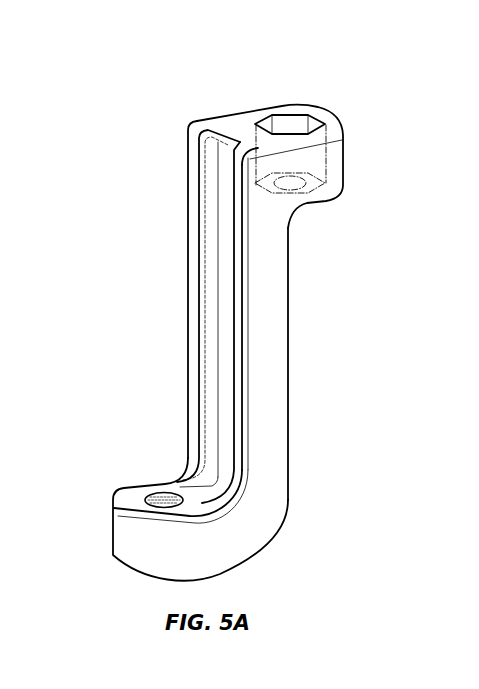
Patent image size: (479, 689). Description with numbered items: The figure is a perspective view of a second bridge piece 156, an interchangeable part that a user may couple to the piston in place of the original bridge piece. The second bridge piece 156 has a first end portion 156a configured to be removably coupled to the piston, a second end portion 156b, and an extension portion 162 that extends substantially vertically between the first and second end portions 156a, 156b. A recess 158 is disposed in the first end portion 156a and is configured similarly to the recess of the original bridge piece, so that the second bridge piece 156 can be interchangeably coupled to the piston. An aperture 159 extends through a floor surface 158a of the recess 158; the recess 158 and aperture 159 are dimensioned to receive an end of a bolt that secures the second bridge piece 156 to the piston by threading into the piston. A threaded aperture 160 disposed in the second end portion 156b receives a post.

The second bridge piece 156 is at (220, 97).
The first end portion 156a is at (344, 162).
The second end portion 156b is at (122, 541).
The recess 158 is at (322, 122).
The floor surface 158a is at (312, 184).
The aperture 159 is at (290, 187).
The threaded aperture 160 is at (162, 497).
The extension portion 162 is at (278, 389).